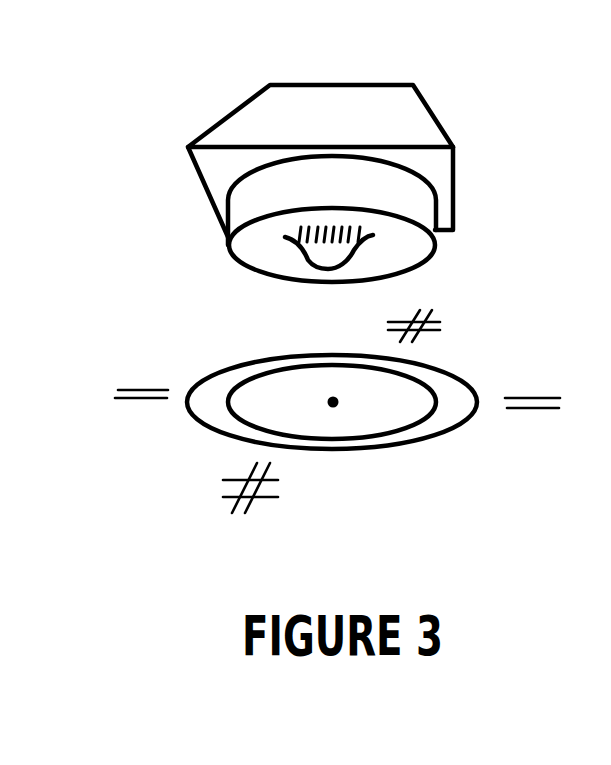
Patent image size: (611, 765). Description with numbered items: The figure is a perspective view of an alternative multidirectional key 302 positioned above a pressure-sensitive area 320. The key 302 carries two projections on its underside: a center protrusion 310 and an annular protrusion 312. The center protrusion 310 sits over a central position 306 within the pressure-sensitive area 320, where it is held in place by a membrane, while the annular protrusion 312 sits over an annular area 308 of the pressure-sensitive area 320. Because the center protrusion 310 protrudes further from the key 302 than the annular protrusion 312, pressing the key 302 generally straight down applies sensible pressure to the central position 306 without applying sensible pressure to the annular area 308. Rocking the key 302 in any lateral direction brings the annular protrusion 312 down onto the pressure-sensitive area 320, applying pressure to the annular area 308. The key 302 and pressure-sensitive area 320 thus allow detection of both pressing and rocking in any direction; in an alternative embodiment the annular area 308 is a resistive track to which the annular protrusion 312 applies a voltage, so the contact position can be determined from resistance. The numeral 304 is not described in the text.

The multidirectional key 302 is at (455, 147).
The outer disk 304 is at (208, 428).
The central position 306 is at (333, 402).
The annular area 308 is at (407, 430).
The center protrusion 310 is at (305, 258).
The annular protrusion 312 is at (230, 248).
The pressure-sensitive area 320 is at (355, 543).